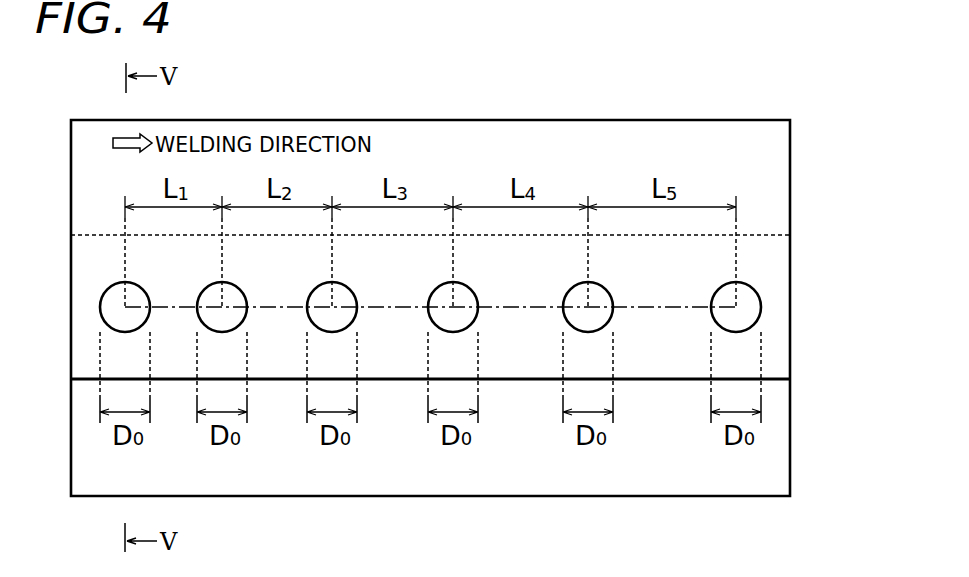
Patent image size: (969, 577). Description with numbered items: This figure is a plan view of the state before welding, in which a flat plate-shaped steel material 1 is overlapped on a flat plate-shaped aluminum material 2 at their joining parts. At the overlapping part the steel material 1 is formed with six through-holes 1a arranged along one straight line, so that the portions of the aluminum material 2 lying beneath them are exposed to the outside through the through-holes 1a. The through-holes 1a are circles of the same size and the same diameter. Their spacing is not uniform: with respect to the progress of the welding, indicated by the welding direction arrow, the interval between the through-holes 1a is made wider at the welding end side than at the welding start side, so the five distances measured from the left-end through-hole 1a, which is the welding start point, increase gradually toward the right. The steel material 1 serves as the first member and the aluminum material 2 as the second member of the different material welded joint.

The steel material 1 is at (765, 160).
The through-holes 1a is at (143, 306).
The aluminum material 2 is at (765, 460).